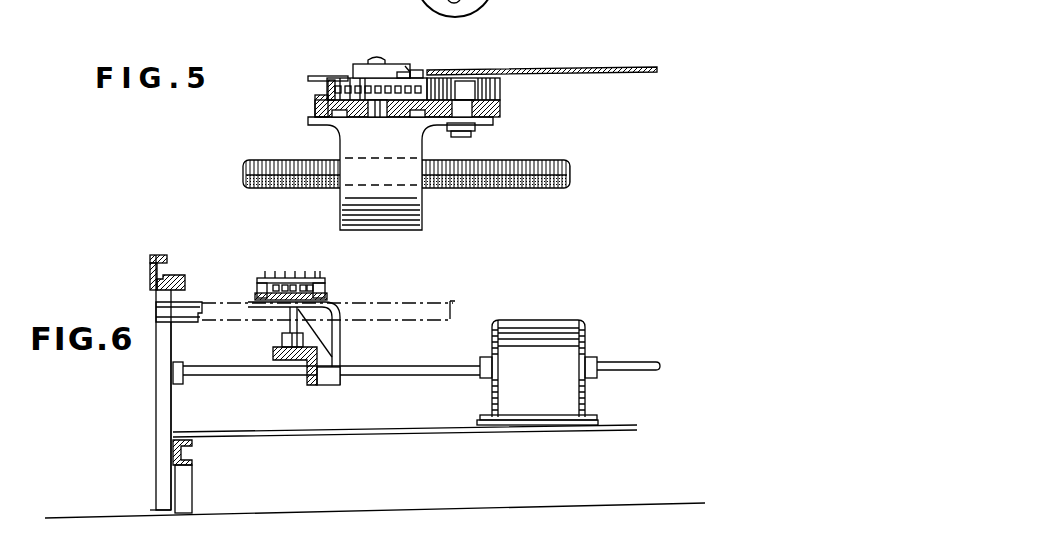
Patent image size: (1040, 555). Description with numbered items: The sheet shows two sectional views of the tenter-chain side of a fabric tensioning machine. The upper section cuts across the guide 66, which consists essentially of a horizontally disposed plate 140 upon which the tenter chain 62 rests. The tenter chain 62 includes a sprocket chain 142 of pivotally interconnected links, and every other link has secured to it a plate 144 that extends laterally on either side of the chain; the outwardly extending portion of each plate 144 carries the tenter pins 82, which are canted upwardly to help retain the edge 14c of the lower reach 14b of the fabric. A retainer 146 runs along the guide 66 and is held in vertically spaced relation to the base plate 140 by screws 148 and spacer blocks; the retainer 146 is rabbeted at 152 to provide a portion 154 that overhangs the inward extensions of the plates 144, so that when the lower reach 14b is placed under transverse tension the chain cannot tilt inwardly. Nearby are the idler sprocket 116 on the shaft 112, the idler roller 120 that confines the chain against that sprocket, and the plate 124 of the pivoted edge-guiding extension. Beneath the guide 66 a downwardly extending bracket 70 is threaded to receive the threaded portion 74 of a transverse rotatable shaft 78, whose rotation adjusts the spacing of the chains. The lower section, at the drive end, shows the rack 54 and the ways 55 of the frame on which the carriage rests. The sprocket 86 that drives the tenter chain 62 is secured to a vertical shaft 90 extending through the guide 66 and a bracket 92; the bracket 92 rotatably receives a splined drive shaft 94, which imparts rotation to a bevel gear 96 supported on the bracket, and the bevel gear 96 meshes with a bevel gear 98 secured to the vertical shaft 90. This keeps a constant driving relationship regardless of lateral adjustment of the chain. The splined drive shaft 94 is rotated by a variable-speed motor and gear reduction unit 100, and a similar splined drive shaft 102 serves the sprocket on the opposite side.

In FIG. 5, the lower reach 14b is at (557, 67).
In FIG. 5, the edge 14c is at (421, 72).
In FIG. 6, the rack 54 is at (156, 253).
In FIG. 6, the ways 55 is at (176, 275).
In FIG. 6, the tenter chain 62 is at (248, 278).
In FIG. 5, the guide 66 is at (314, 105).
In FIG. 6, the guide 66 is at (278, 300).
In FIG. 5, the bracket 70 is at (348, 156).
In FIG. 5, the threaded portion 74 is at (507, 160).
In FIG. 5, the rotatable shaft 78 is at (558, 154).
In FIG. 5, the tenter pin 82 is at (320, 76).
In FIG. 6, the tenter pin 82 is at (280, 278).
In FIG. 6, the sprocket 86 is at (293, 283).
In FIG. 6, the vertical shaft 90 is at (287, 326).
In FIG. 6, the bracket 92 is at (340, 343).
In FIG. 6, the drive shaft 94 is at (393, 368).
In FIG. 6, the bevel gear 96 is at (327, 385).
In FIG. 6, the bevel gear 98 is at (285, 360).
In FIG. 6, the motor and gear reduction unit 100 is at (540, 318).
In FIG. 6, the splined drive shaft 102 is at (626, 366).
In FIG. 5, the shaft 112 is at (375, 118).
In FIG. 5, the idler sprocket 116 is at (363, 86).
In FIG. 5, the idler roller 120 is at (477, 78).
In FIG. 5, the plate 124 is at (350, 118).
In FIG. 5, the plate 140 is at (317, 99).
In FIG. 5, the sprocket chain 142 is at (327, 83).
In FIG. 5, the plate 144 is at (330, 78).
In FIG. 5, the retainer 146 is at (393, 66).
In FIG. 5, the screw 148 is at (373, 58).
In FIG. 5, the rabbet 152 is at (403, 72).
In FIG. 5, the overhanging portion 154 is at (405, 66).